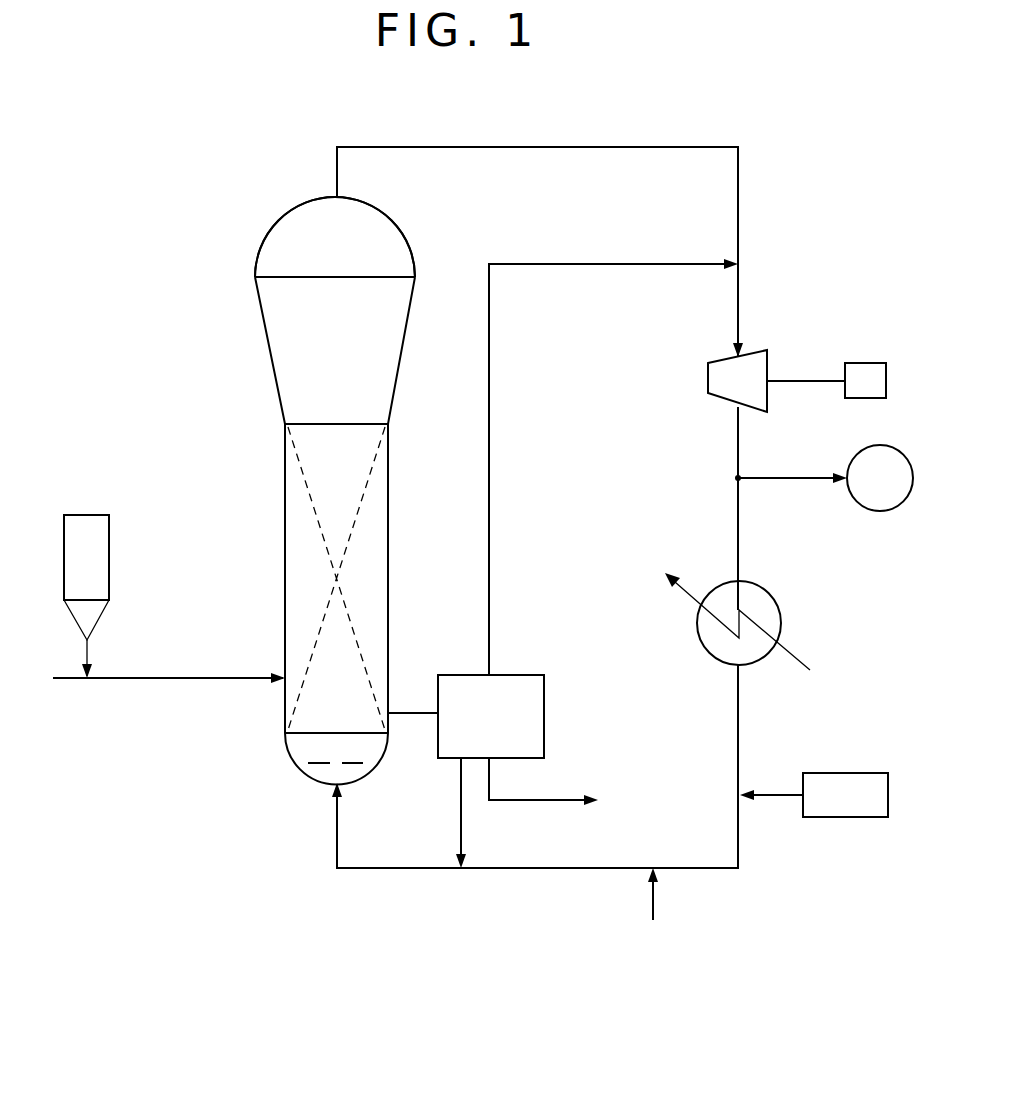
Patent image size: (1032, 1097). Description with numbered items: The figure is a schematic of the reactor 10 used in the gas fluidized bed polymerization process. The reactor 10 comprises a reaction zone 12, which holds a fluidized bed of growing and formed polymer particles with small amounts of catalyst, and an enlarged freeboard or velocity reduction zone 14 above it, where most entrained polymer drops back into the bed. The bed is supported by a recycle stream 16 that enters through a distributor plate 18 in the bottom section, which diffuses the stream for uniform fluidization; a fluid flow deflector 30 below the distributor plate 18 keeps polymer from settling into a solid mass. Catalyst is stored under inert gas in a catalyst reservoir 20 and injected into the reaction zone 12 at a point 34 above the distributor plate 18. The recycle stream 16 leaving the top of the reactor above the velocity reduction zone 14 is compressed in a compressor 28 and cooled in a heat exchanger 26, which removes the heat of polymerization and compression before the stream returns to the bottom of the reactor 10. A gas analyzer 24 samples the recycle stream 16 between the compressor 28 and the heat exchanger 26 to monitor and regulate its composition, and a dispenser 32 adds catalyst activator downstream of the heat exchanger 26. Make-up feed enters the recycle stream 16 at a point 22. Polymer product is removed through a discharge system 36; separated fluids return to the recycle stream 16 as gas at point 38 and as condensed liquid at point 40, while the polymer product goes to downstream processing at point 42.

The reactor 10 is at (285, 484).
The reaction zone 12 is at (354, 487).
The velocity reduction zone 14 is at (352, 249).
The recycle stream 16 is at (648, 148).
The distributor plate 18 is at (284, 736).
The catalyst reservoir 20 is at (104, 571).
The make-up feed point 22 is at (657, 873).
The gas analyzer 24 is at (824, 478).
The heat exchanger 26 is at (780, 607).
The compressor 28 is at (762, 350).
The fluid flow deflector 30 is at (326, 786).
The dispenser 32 is at (862, 806).
The catalyst injection point 34 is at (284, 675).
The discharge system 36 is at (510, 731).
The gas return point 38 is at (733, 268).
The condensed liquid return point 40 is at (458, 863).
The downstream processing point 42 is at (564, 788).